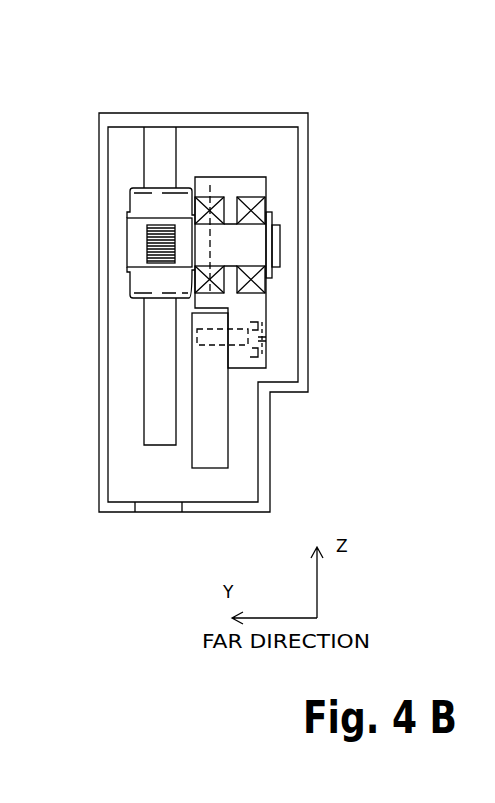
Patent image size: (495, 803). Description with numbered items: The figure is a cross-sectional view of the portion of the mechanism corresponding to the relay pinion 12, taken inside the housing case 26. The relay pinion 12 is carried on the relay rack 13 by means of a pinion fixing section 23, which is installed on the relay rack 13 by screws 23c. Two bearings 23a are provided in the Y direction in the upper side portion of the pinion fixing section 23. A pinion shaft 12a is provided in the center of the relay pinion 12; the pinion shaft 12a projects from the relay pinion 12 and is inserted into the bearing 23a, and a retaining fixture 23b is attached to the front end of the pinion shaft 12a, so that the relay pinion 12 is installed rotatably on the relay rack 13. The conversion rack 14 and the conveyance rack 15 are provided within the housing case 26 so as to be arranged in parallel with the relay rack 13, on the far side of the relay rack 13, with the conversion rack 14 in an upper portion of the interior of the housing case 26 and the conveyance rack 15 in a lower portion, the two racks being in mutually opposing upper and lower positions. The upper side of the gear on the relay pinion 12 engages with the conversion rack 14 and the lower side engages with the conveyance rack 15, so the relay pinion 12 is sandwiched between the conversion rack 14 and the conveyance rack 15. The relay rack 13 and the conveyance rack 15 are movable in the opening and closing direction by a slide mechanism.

The relay pinion 12 is at (147, 213).
The pinion shaft 12a is at (255, 249).
The relay rack 13 is at (210, 453).
The conversion rack 14 is at (158, 135).
The conveyance rack 15 is at (153, 429).
The pinion fixing section 23 is at (253, 311).
The bearing 23a is at (262, 214).
The retaining fixture 23b is at (268, 275).
The screw 23c is at (258, 338).
The housing case 26 is at (262, 120).